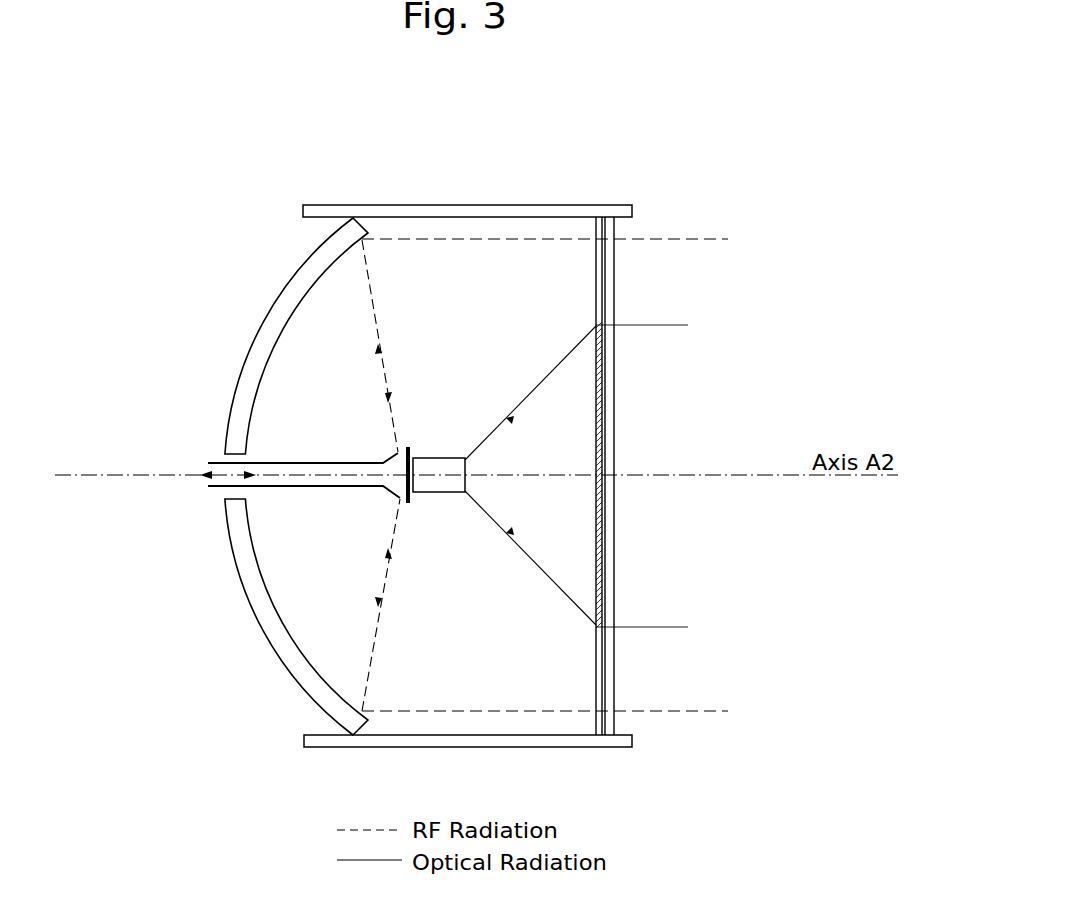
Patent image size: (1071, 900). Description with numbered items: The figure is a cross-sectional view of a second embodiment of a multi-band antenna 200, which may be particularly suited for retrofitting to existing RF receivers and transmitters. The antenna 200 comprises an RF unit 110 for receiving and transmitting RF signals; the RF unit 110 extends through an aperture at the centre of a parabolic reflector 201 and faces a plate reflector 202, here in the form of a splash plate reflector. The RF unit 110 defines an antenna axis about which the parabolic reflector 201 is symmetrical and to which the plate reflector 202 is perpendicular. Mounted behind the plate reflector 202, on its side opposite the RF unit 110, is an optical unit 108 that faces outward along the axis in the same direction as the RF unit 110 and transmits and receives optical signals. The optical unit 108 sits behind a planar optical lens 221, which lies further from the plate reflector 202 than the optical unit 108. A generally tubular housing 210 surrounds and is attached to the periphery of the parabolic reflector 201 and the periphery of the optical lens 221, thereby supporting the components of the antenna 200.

The multi-band antenna 200 is at (377, 148).
The housing 210 is at (498, 212).
The parabolic reflector 201 is at (263, 342).
The RF unit 110 is at (210, 463).
The plate reflector 202 is at (412, 503).
The optical unit 108 is at (448, 468).
The optical lens 221 is at (603, 535).